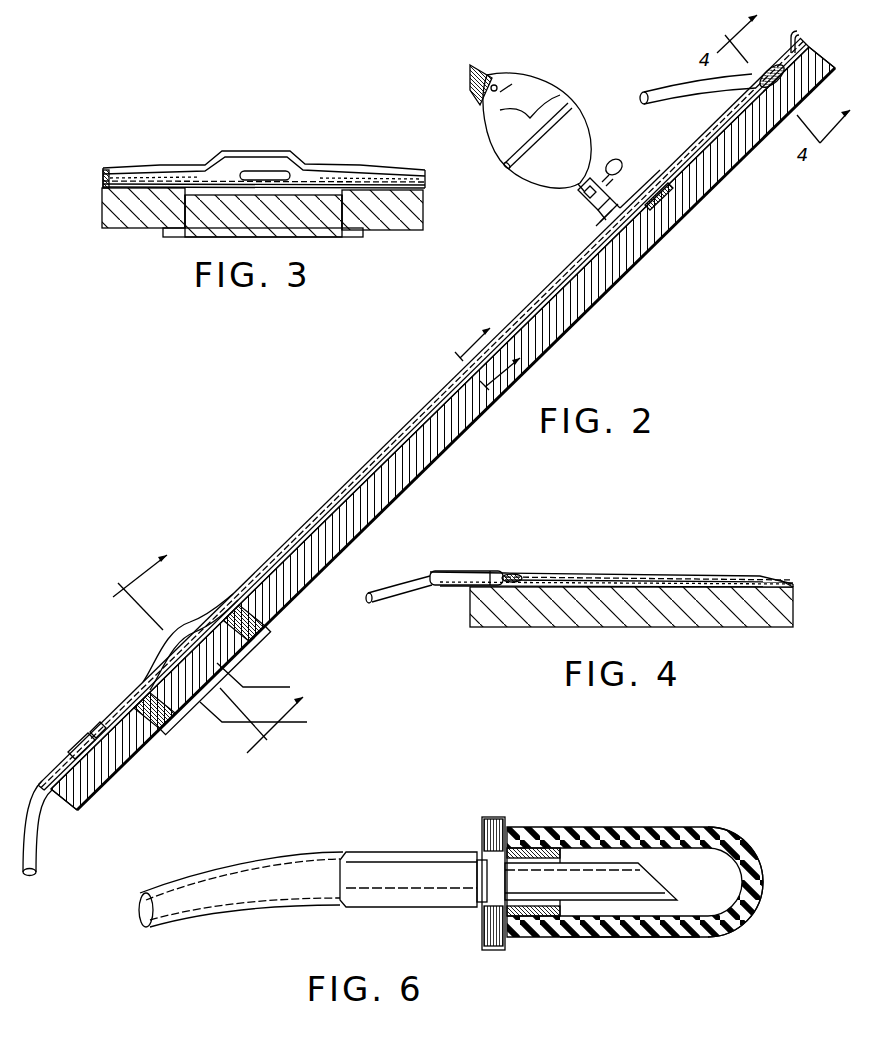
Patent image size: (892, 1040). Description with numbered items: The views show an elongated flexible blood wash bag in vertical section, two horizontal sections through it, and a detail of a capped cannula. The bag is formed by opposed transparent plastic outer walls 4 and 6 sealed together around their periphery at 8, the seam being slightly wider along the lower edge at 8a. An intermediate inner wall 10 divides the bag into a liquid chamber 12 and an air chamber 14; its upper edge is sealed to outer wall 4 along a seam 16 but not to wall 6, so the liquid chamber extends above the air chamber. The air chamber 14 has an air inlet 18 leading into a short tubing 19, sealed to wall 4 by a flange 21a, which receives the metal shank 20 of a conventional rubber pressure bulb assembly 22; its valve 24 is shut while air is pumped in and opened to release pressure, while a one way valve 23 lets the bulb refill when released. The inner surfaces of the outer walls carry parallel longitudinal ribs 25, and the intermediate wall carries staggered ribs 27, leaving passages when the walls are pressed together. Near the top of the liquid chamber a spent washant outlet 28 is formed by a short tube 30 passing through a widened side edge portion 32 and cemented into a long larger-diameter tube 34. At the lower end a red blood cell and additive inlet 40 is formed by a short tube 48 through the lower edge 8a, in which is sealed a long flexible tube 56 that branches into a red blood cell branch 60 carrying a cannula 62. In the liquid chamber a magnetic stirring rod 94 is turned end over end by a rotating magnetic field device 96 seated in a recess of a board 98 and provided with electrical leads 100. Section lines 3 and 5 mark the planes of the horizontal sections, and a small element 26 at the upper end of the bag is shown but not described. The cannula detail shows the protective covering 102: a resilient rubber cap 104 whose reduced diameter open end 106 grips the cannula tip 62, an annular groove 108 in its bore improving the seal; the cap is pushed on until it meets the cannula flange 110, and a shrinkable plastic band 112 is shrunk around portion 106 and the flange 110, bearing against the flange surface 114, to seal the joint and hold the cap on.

In FIG. 2, the section line 3— 3 is at (202, 662).
In FIG. 2, the outer wall 4 is at (398, 440).
In FIG. 3, the outer wall 4 is at (318, 165).
In FIG. 4, the outer wall 4 is at (610, 575).
In FIG. 2, the section line 5- 5 is at (482, 367).
In FIG. 2, the outer wall 6 is at (350, 512).
In FIG. 3, the outer wall 6 is at (373, 232).
In FIG. 4, the outer wall 6 is at (690, 578).
In FIG. 2, the peripheral seam 8 is at (807, 86).
In FIG. 3, the peripheral seam 8 is at (108, 166).
In FIG. 4, the peripheral seam 8 is at (790, 586).
In FIG. 2, the widened lower seam portion 8a is at (90, 735).
In FIG. 2, the intermediate inner wall 10 is at (347, 487).
In FIG. 3, the intermediate inner wall 10 is at (370, 168).
In FIG. 2, the liquid chamber 12 is at (232, 620).
In FIG. 3, the liquid chamber 12 is at (212, 176).
In FIG. 4, the liquid chamber 12 is at (649, 578).
In FIG. 2, the air chamber 14 is at (302, 532).
In FIG. 3, the air chamber 14 is at (270, 150).
In FIG. 4, the air chamber 14 is at (540, 575).
In FIG. 2, the seam 16 is at (662, 192).
In FIG. 2, the air inlet 18 is at (634, 202).
In FIG. 2, the tubing 19 is at (600, 218).
In FIG. 2, the metal shank 20 is at (590, 200).
In FIG. 2, the flange 21a is at (600, 240).
In FIG. 2, the pressure bulb assembly 22 is at (542, 96).
In FIG. 2, the one way valve 23 is at (503, 83).
In FIG. 2, the valve 24 is at (618, 160).
In FIG. 3, the ribs 25 is at (150, 170).
In FIG. 4, the ribs 25 is at (583, 574).
In FIG. 2, the hook 26 is at (799, 36).
In FIG. 3, the ribs 27 is at (163, 192).
In FIG. 2, the outlet 28 is at (773, 70).
In FIG. 4, the outlet 28 is at (520, 573).
In FIG. 4, the tubing 30 is at (472, 571).
In FIG. 4, the widened upper side edge portion 32 is at (495, 572).
In FIG. 2, the tubing 34 is at (672, 94).
In FIG. 4, the tubing 34 is at (390, 580).
In FIG. 2, the red blood cell and additive inlet 40 is at (100, 722).
In FIG. 2, the tubing 48 is at (78, 740).
In FIG. 2, the tubing 56 is at (38, 854).
In FIG. 6, the red blood cell branch 60 is at (265, 866).
In FIG. 6, the cannula tip 62 is at (640, 885).
In FIG. 2, the magnetic stirring rod 94 is at (187, 620).
In FIG. 3, the magnetic stirring rod 94 is at (287, 170).
In FIG. 2, the rotating magnetic field creating device 96 is at (227, 647).
In FIG. 3, the rotating magnetic field creating device 96 is at (210, 232).
In FIG. 2, the board 98 is at (413, 470).
In FIG. 3, the board 98 is at (112, 205).
In FIG. 4, the board 98 is at (487, 626).
In FIG. 2, the electrical leads 100 is at (290, 687).
In FIG. 6, the protective covering 102 is at (638, 946).
In FIG. 6, the rubber cap 104 is at (702, 940).
In FIG. 6, the reduced diameter portion 106 is at (545, 925).
In FIG. 6, the annular groove 108 is at (545, 850).
In FIG. 6, the cannula flange 110 is at (492, 818).
In FIG. 6, the annular band 112 is at (588, 940).
In FIG. 6, the flange surface 114 is at (478, 876).